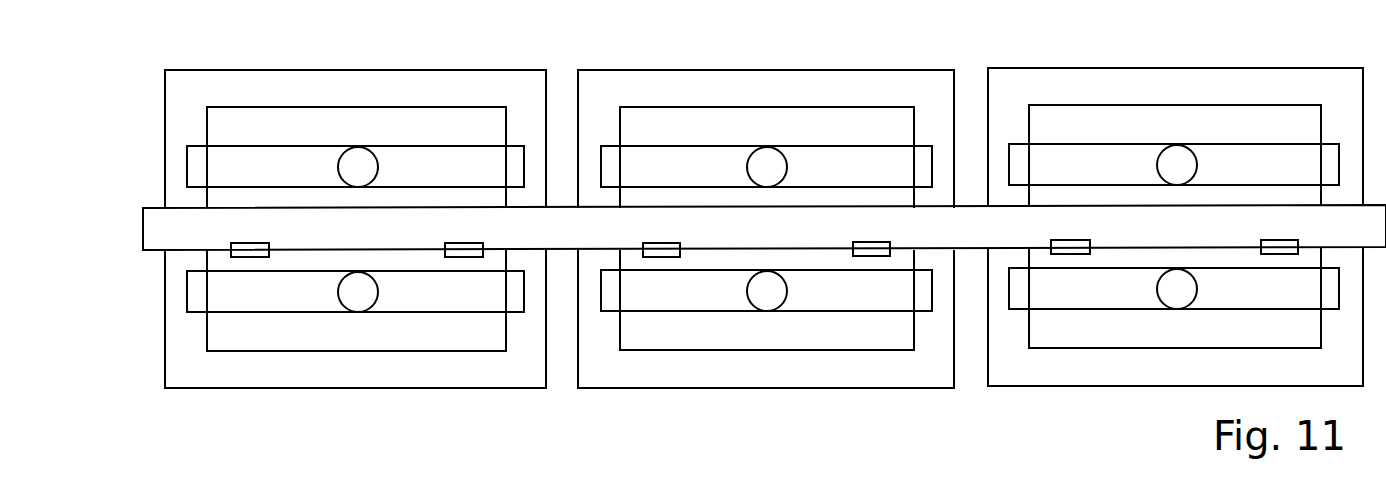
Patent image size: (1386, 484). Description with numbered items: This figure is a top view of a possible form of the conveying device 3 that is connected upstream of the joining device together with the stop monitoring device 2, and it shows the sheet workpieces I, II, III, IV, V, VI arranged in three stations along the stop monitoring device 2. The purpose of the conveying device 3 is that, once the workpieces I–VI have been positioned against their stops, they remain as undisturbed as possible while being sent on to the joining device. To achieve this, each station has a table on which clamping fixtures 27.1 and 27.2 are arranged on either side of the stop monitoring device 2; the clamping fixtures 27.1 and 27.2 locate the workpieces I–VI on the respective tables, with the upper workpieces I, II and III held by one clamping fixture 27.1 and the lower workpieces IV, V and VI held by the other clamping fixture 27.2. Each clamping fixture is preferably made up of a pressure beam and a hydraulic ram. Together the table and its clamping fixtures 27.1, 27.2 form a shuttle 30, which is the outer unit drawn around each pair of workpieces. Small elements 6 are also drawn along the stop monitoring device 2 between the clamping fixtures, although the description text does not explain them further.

The stop monitoring device 2 is at (568, 198).
The conveying device 3 is at (363, 234).
The shuttle 30 is at (213, 397).
The clamping fixture 27.1 is at (457, 165).
The clamping fixture 27.2 is at (475, 289).
The sensor 6 is at (872, 249).
The sheet workpiece I is at (418, 123).
The sheet workpiece II is at (797, 118).
The sheet workpiece III is at (1181, 113).
The sheet workpiece IV is at (350, 340).
The sheet workpiece V is at (728, 333).
The sheet workpiece VI is at (1174, 332).